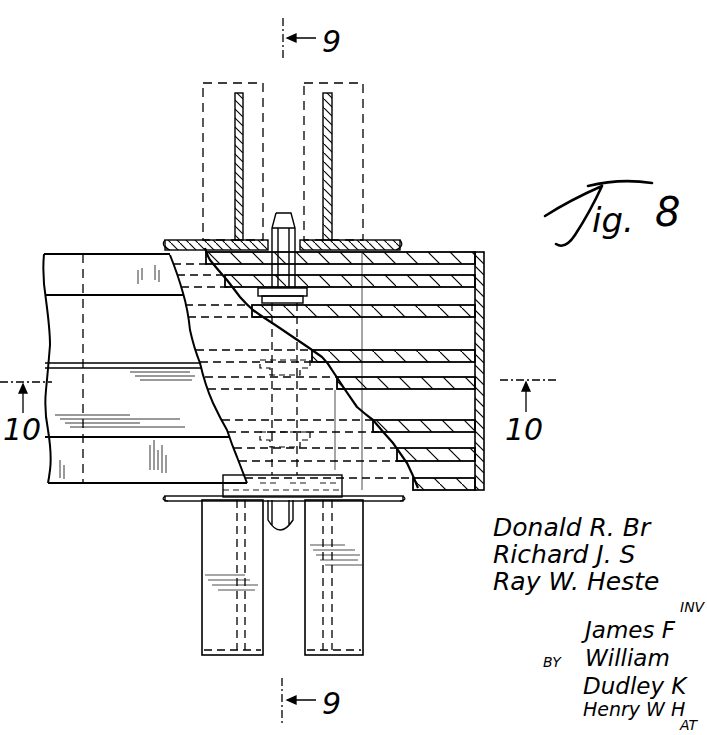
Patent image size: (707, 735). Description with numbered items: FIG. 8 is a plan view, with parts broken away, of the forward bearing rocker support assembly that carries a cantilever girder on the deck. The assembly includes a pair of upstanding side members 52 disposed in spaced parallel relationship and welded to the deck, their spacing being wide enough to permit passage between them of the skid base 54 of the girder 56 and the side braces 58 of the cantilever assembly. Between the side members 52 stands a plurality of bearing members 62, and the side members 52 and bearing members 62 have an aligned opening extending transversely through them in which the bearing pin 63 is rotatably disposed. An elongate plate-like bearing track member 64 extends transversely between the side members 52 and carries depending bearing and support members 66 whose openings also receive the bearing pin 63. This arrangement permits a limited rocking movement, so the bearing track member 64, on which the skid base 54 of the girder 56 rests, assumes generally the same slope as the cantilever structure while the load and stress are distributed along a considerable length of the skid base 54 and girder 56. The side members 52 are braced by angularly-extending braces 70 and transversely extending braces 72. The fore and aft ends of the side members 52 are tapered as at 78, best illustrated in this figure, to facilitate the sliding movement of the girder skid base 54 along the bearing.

The upstanding side members 52 is at (372, 240).
The skid base 54 is at (128, 282).
The girder 56 is at (120, 372).
The side braces 58 is at (133, 333).
The bearing members 62 is at (320, 358).
The bearing pin 63 is at (280, 212).
The bearing track member 64 is at (300, 410).
The bearing and support members 66 is at (465, 262).
The angularly-extending braces 70 is at (304, 168).
The transversely extending braces 72 is at (235, 118).
The tapered ends 78 is at (166, 242).